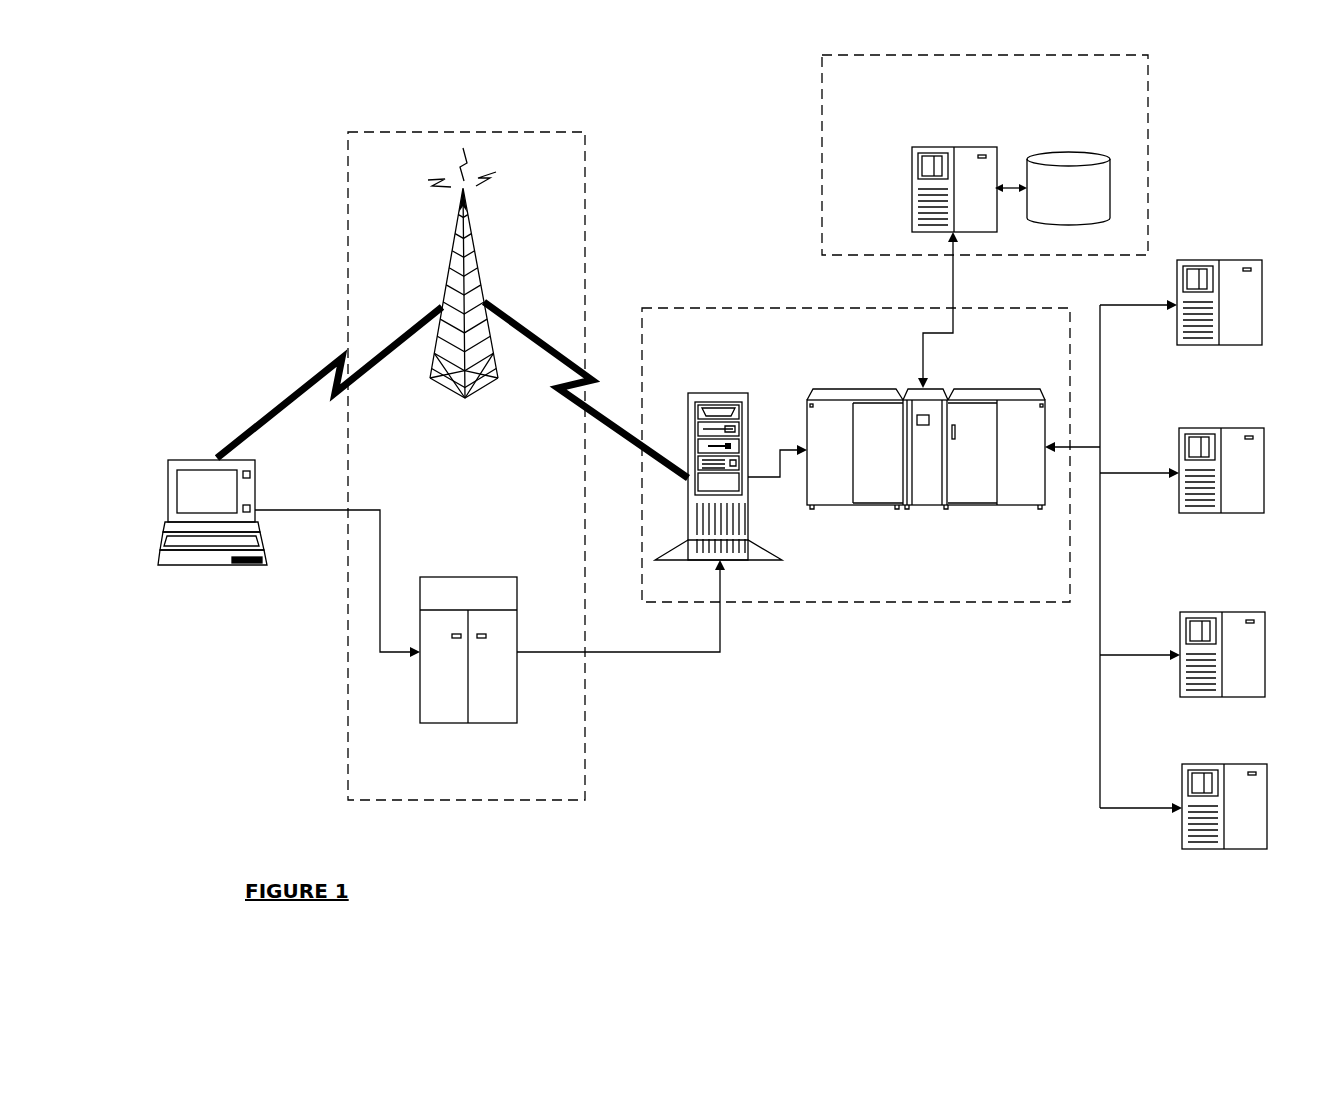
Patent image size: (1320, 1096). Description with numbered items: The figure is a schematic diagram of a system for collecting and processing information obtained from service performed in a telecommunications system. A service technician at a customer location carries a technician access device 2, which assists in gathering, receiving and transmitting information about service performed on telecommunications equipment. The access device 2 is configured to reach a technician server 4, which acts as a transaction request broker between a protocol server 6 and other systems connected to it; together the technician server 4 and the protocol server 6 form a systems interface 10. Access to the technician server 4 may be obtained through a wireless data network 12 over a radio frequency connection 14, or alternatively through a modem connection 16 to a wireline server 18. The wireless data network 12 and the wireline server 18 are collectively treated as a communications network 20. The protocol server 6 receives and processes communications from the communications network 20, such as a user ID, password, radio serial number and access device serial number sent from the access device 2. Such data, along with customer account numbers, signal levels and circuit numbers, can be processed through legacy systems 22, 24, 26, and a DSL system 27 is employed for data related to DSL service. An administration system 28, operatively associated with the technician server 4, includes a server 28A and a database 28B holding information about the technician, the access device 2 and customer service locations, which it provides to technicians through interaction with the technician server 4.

The technician access device 2 is at (213, 568).
The technician server 4 is at (927, 512).
The protocol server 6 is at (720, 477).
The systems interface 10 is at (768, 307).
The wireless data network 12 is at (463, 292).
The radio frequency connection 14 is at (334, 375).
The modem connection 16 is at (325, 512).
The wireline server 18 is at (468, 577).
The communications network 20 is at (345, 215).
The legacy system 22 is at (1218, 260).
The legacy system 24 is at (1217, 428).
The legacy system 26 is at (1180, 653).
The DSL system 27 is at (1268, 807).
The administration system 28 is at (835, 115).
The server 28A is at (915, 190).
The database 28B is at (1067, 162).